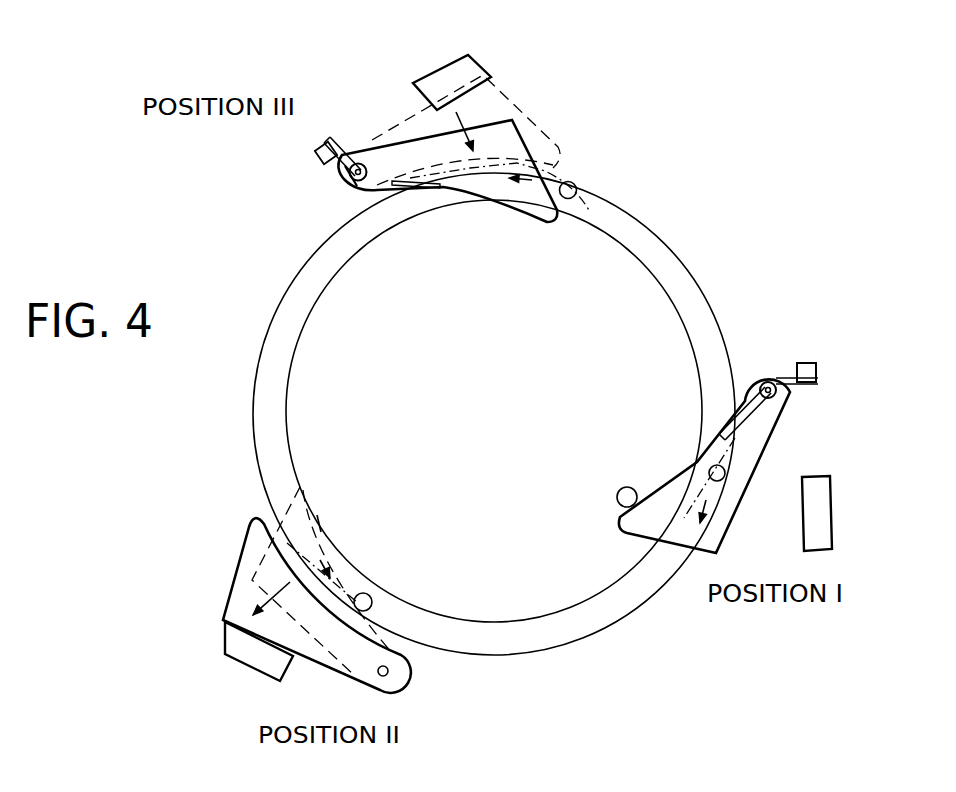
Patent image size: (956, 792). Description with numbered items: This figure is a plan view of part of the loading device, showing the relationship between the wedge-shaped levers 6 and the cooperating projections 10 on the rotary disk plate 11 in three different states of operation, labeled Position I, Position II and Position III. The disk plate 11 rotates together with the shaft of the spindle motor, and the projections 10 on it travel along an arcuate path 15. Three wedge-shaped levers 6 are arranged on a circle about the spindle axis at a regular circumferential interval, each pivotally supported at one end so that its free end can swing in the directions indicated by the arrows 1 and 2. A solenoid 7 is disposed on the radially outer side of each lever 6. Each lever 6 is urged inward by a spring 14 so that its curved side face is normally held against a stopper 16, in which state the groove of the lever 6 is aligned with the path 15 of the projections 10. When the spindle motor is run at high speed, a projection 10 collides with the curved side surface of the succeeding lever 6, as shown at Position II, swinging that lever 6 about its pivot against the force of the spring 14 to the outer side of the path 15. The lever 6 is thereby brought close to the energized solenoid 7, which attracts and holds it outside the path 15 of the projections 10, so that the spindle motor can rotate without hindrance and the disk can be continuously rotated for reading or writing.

The disk 1 is at (512, 336).
The direction of lever movement 2 is at (392, 404).
The wedge-shaped lever 6 is at (507, 137).
The solenoid 7 is at (425, 85).
The projection 10 is at (573, 184).
The rotary disk plate 11 is at (508, 429).
The spring 14 is at (812, 386).
The arcuate path 15 is at (674, 272).
The stopper 16 is at (617, 502).